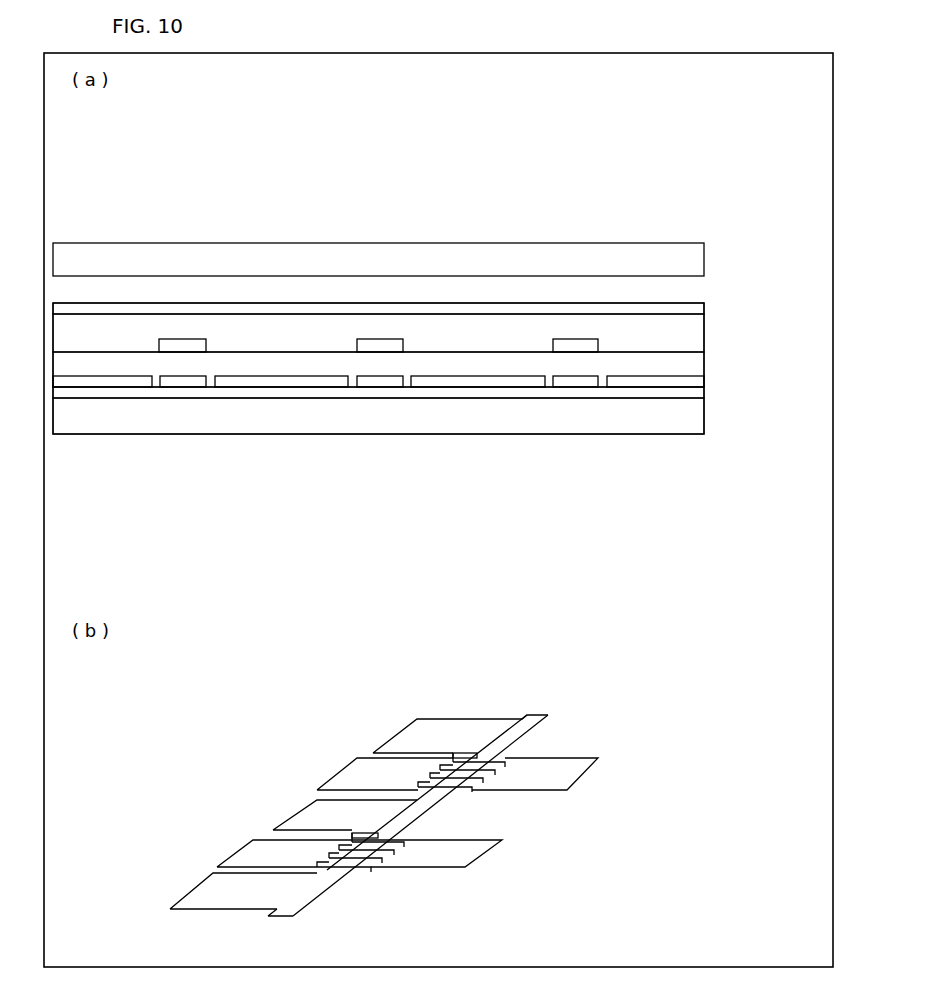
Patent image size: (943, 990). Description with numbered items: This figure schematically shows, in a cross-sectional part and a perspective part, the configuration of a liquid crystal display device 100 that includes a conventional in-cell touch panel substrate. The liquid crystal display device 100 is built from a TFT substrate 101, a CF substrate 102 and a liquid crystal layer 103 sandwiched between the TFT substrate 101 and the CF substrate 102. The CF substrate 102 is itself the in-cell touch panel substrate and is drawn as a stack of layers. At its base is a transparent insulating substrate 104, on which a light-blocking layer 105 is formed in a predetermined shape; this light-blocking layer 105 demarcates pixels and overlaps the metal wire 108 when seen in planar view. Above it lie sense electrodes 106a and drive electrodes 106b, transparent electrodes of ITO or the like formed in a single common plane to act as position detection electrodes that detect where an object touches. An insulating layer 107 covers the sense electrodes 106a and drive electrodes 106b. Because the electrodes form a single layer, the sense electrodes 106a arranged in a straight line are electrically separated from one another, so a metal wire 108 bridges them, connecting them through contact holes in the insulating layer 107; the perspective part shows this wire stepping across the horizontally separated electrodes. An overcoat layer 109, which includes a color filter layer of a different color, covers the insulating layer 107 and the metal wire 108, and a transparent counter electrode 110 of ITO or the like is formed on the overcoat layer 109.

The liquid crystal display device 100 is at (627, 208).
The TFT substrate 101 is at (694, 260).
The CF substrate 102 is at (765, 303).
The liquid crystal layer 103 is at (694, 289).
The transparent insulating substrate 104 is at (694, 424).
The light-blocking layer 105 is at (694, 400).
The sense electrodes 106a is at (694, 383).
The drive electrodes 106b is at (182, 381).
The insulating layer 107 is at (694, 362).
The metal wire 108 is at (378, 348).
The overcoat layer 109 is at (694, 333).
The transparent counter electrode 110 is at (694, 308).